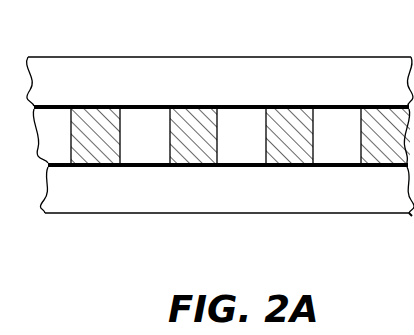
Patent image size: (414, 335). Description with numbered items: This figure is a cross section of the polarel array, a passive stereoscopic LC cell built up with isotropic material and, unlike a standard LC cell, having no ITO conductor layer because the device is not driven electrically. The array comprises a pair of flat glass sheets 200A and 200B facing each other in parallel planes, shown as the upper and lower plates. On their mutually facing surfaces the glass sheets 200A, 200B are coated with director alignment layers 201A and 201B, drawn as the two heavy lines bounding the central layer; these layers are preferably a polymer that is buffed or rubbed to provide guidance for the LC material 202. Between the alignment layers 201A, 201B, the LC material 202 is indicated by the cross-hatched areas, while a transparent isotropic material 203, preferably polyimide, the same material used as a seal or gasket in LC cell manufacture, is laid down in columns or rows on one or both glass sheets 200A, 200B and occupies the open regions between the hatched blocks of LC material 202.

The flat glass sheet 200A is at (187, 67).
The flat glass sheet 200B is at (119, 206).
The director alignment layer 201A is at (297, 105).
The director alignment layer 201B is at (350, 167).
The LC material 202 is at (84, 117).
The transparent isotropic material 203 is at (249, 156).